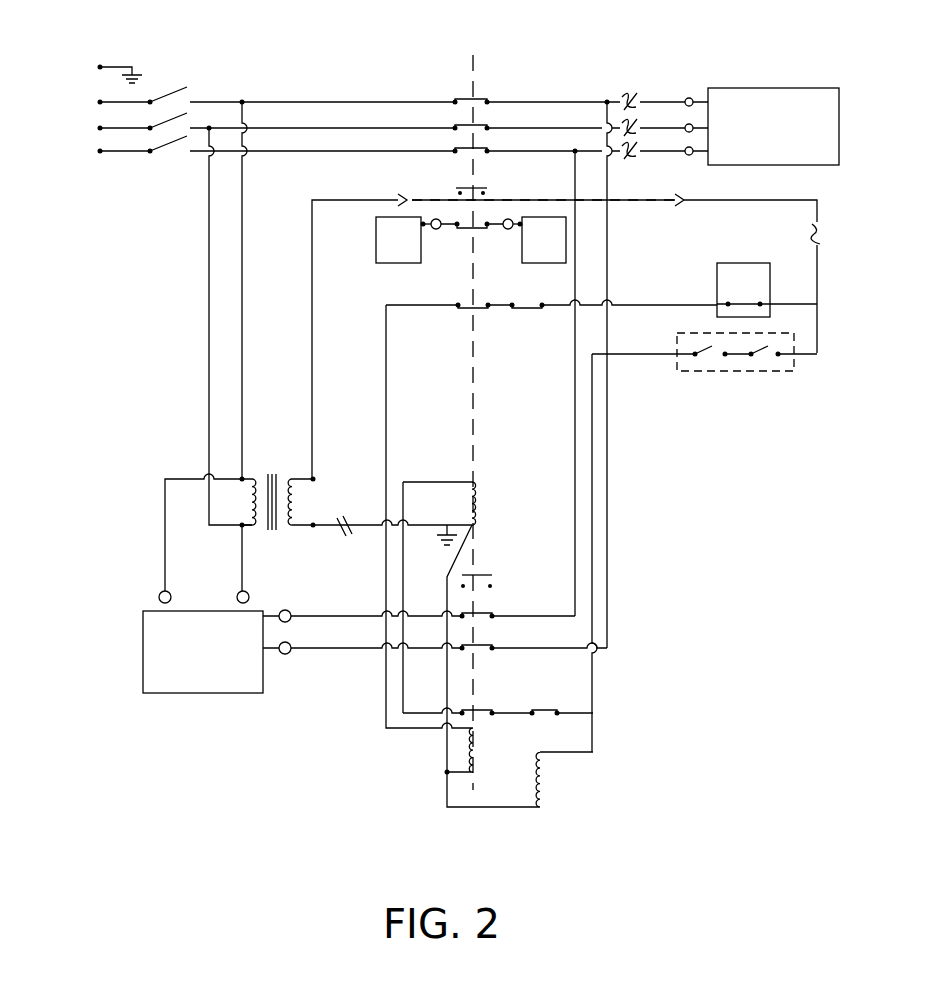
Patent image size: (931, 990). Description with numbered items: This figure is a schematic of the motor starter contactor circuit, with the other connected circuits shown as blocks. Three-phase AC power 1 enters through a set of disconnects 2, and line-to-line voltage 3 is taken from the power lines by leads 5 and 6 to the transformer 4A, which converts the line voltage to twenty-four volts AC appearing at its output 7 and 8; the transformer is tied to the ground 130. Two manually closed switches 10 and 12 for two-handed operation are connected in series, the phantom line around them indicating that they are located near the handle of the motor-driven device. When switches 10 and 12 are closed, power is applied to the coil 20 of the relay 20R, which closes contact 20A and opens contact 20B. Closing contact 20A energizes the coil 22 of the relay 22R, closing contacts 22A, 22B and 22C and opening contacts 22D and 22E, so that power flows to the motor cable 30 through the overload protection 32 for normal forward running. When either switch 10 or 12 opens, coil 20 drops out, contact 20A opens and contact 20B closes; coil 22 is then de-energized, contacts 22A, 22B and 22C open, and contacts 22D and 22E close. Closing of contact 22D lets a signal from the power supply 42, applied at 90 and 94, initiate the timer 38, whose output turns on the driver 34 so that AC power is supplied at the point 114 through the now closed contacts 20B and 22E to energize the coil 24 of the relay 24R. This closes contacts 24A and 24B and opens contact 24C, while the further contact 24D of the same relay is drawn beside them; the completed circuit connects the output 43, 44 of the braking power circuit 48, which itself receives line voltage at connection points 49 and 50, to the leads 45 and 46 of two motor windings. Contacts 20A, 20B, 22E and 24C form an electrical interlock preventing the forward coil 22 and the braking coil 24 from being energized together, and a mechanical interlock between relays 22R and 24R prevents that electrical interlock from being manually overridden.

The three-phase AC power 1 is at (99, 96).
The set of disconnects 2 is at (198, 86).
The line-to-line voltage 3 is at (227, 114).
The transformer 4A is at (262, 470).
The lead 5 is at (209, 265).
The lead 6 is at (241, 300).
The 24 VAC output of the transformer 7 is at (314, 477).
The 24 VAC output of the transformer 8 is at (314, 524).
The switch 10 is at (765, 350).
The switch 12 is at (707, 358).
The coil 20 is at (545, 772).
The contact 20A is at (560, 708).
The contact 20B is at (528, 309).
The relay 20R is at (544, 812).
The coil 22 is at (478, 484).
The contact 22A is at (487, 100).
The contact 22B is at (487, 126).
The contact 22C is at (487, 149).
The contact 22D is at (473, 229).
The contact 22E is at (470, 309).
The relay 22R is at (455, 90).
The coil 24 is at (480, 762).
The contact 24A is at (480, 613).
The contact 24B is at (480, 645).
The contact 24C is at (478, 711).
The relay contact 24D is at (487, 576).
The relay 24R is at (487, 557).
The motor cable 30 is at (776, 86).
The overload protection 32 is at (629, 91).
The driver 34 is at (767, 290).
The timer 38 is at (403, 240).
The power supply 42 is at (539, 240).
The output of the braking power circuit 43 is at (288, 654).
The output of the braking power circuit 44 is at (291, 613).
The motor winding lead 45 is at (607, 99).
The motor winding lead 46 is at (575, 148).
The braking power circuit 48 is at (211, 652).
The circuit connection point 49 is at (165, 590).
The circuit connection point 50 is at (249, 596).
The terminal 90 is at (511, 219).
The DC voltage point 94 is at (434, 219).
The point 114 is at (727, 302).
The ground 130 is at (445, 549).